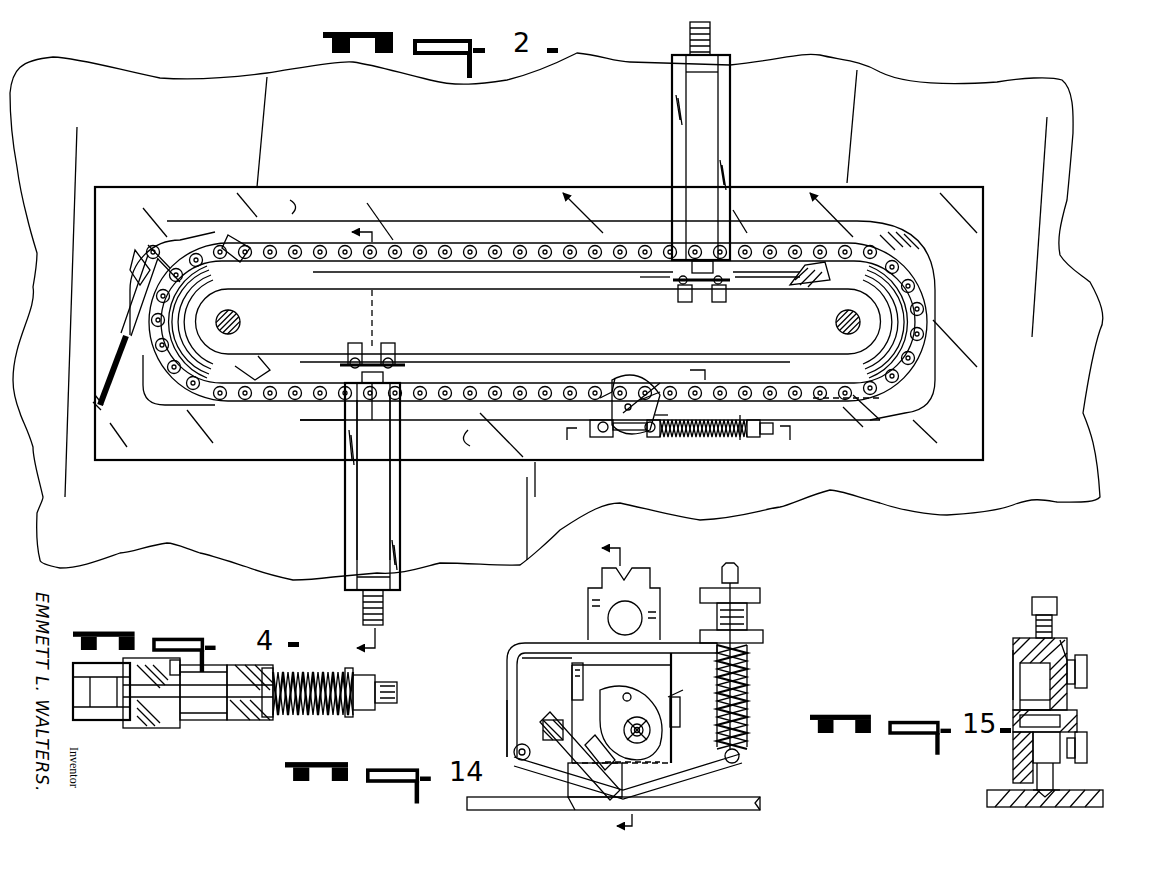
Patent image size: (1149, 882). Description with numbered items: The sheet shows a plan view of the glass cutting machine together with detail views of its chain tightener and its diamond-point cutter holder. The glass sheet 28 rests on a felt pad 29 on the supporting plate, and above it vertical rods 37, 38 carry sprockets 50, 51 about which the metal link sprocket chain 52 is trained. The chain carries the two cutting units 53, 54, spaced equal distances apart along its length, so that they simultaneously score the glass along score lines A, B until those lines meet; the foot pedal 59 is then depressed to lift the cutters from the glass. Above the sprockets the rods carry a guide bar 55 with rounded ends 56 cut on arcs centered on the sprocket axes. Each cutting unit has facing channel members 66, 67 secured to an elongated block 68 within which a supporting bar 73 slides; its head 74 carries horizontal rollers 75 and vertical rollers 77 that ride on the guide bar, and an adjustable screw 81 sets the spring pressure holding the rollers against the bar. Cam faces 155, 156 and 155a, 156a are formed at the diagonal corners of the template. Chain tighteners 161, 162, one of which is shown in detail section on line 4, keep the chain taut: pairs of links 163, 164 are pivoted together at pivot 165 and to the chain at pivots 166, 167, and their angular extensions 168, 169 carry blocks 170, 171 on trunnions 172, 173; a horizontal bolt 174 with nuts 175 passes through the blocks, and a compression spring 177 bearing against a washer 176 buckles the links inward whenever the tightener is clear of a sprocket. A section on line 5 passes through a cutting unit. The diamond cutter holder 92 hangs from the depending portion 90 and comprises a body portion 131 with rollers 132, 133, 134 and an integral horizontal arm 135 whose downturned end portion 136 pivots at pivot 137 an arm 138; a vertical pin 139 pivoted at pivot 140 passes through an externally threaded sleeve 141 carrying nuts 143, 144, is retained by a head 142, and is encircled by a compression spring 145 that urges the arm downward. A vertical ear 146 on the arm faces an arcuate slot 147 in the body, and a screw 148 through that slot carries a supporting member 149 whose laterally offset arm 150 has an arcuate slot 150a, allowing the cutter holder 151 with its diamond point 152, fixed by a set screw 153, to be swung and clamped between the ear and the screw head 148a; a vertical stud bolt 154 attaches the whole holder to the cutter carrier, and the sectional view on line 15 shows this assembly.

In FIG. 2, the glass sheet 28 is at (930, 196).
In FIG. 14, the glass sheet 28 is at (740, 808).
In FIG. 15, the glass sheet 28 is at (1005, 808).
In FIG. 2, the pad 29 is at (1013, 482).
In FIG. 2, the vertical rod 37 is at (242, 328).
In FIG. 2, the vertical rod 38 is at (836, 324).
In FIG. 2, the sprocket 50 is at (262, 290).
In FIG. 2, the sprocket 51 is at (808, 285).
In FIG. 2, the sprocket chain 52 is at (440, 210).
In FIG. 2, the cutting unit 53 is at (572, 323).
In FIG. 2, the cutting unit 54 is at (358, 445).
In FIG. 2, the guide bar 55 is at (606, 280).
In FIG. 2, the rounded ends 56 is at (200, 348).
In FIG. 2, the foot pedal 59 is at (505, 245).
In FIG. 2, the channel member 66 is at (346, 540).
In FIG. 2, the channel member 67 is at (394, 522).
In FIG. 2, the elongated block 68 is at (708, 104).
In FIG. 2, the supporting bar 73 is at (344, 418).
In FIG. 2, the head 74 is at (375, 405).
In FIG. 2, the horizontal rollers 75 is at (345, 350).
In FIG. 2, the vertical rollers 77 is at (348, 366).
In FIG. 2, the screw 81 is at (712, 30).
In FIG. 14, the depending portion 90 is at (632, 578).
In FIG. 14, the cutter holder 92 is at (548, 640).
In FIG. 15, the cutter holder 92 is at (1068, 645).
In FIG. 14, the body portion 131 is at (660, 645).
In FIG. 15, the body portion 131 is at (1070, 650).
In FIG. 14, the roller 132 is at (572, 675).
In FIG. 15, the roller 132 is at (1087, 668).
In FIG. 15, the roller 133 is at (1087, 742).
In FIG. 14, the roller 134 is at (682, 712).
In FIG. 14, the horizontal arm 135 is at (590, 640).
In FIG. 15, the horizontal arm 135 is at (1013, 648).
In FIG. 14, the downturned end portion 136 is at (505, 690).
In FIG. 14, the pivot 137 is at (518, 760).
In FIG. 14, the arm 138 is at (694, 778).
In FIG. 14, the vertical pin 139 is at (745, 705).
In FIG. 14, the pivot 140 is at (740, 757).
In FIG. 14, the externally threaded sleeve 141 is at (750, 615).
In FIG. 14, the head 142 is at (738, 570).
In FIG. 14, the nut 143 is at (757, 590).
In FIG. 14, the nut 144 is at (765, 638).
In FIG. 14, the compression spring 145 is at (748, 722).
In FIG. 14, the vertical ear 146 is at (655, 735).
In FIG. 15, the vertical ear 146 is at (1012, 755).
In FIG. 14, the arcuate slot 147 is at (624, 697).
In FIG. 15, the arcuate slot 147 is at (1078, 706).
In FIG. 15, the screw 148 is at (1042, 715).
In FIG. 15, the head 148a is at (1078, 726).
In FIG. 14, the supporting member 149 is at (560, 765).
In FIG. 15, the supporting member 149 is at (1055, 772).
In FIG. 14, the laterally offset arm 150 is at (618, 690).
In FIG. 15, the laterally offset arm 150 is at (1020, 698).
In FIG. 14, the arcuate slot 150a is at (683, 694).
In FIG. 14, the cutter holder 151 is at (555, 718).
In FIG. 14, the diamond point 152 is at (612, 800).
In FIG. 15, the diamond point 152 is at (1040, 808).
In FIG. 14, the set screw 153 is at (568, 805).
In FIG. 15, the vertical stud bolt 154 is at (1030, 600).
In FIG. 2, the cam face 155 is at (165, 410).
In FIG. 2, the cam face 155a is at (130, 260).
In FIG. 2, the cam face 156 is at (150, 398).
In FIG. 2, the cam face 156a is at (185, 240).
In FIG. 2, the chain tightener 161 is at (123, 283).
In FIG. 2, the chain tightener 162 is at (650, 378).
In FIG. 2, the links 163 is at (617, 380).
In FIG. 2, the links 164 is at (645, 398).
In FIG. 2, the pivot 165 is at (630, 372).
In FIG. 2, the pivot 166 is at (603, 390).
In FIG. 2, the pivot 167 is at (700, 372).
In FIG. 2, the angular extension 168 is at (590, 424).
In FIG. 2, the angular extension 169 is at (678, 411).
In FIG. 2, the block 170 is at (605, 440).
In FIG. 4, the block 170 is at (150, 724).
In FIG. 2, the block 171 is at (650, 440).
In FIG. 4, the block 171 is at (240, 722).
In FIG. 2, the trunnion 172 is at (592, 440).
In FIG. 4, the trunnion 172 is at (175, 658).
In FIG. 2, the trunnion 173 is at (610, 436).
In FIG. 4, the trunnion 173 is at (262, 668).
In FIG. 2, the horizontal bolt 174 is at (700, 440).
In FIG. 4, the horizontal bolt 174 is at (195, 722).
In FIG. 2, the nuts 175 is at (762, 425).
In FIG. 4, the nuts 175 is at (370, 712).
In FIG. 2, the washer 176 is at (768, 437).
In FIG. 4, the washer 176 is at (350, 716).
In FIG. 2, the compression spring 177 is at (740, 445).
In FIG. 4, the compression spring 177 is at (330, 668).
In FIG. 2, the score line A is at (294, 207).
In FIG. 2, the score line B is at (471, 439).
In FIG. 2, the section line 4 is at (671, 436).
In FIG. 2, the section line 5 is at (352, 439).
In FIG. 14, the section line 15 is at (633, 682).